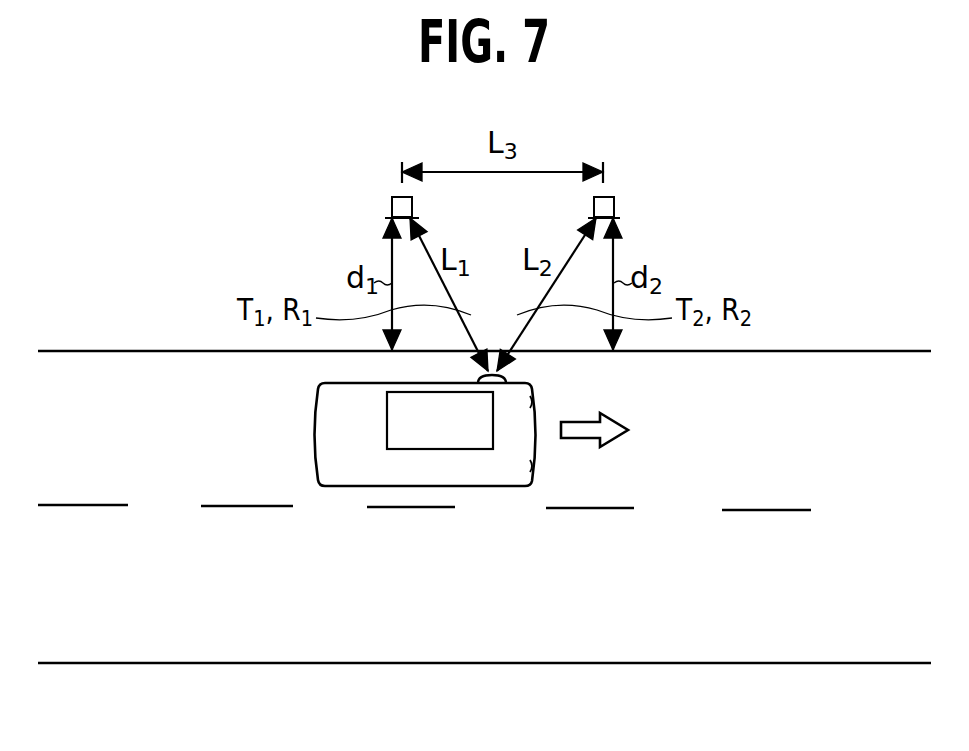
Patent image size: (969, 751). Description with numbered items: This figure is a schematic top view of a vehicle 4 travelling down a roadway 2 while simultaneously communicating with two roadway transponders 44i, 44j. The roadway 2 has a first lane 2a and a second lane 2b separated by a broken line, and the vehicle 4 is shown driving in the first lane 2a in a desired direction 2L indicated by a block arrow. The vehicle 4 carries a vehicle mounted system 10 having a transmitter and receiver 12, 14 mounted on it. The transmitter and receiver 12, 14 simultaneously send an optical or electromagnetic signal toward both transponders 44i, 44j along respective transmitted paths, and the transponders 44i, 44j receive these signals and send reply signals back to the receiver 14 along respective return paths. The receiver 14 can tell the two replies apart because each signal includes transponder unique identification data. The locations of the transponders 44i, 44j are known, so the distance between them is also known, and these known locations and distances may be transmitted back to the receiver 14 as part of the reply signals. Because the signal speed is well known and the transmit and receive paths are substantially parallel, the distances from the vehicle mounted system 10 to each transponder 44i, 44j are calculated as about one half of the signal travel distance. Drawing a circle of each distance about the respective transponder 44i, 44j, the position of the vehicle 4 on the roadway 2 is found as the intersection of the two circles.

The roadway 2 is at (493, 664).
The first lane 2a is at (98, 445).
The second lane 2b is at (82, 604).
The desired direction 2L is at (585, 440).
The vehicle 4 is at (356, 460).
The vehicle mounted system 10 is at (455, 436).
The transmitter 12 is at (551, 381).
The receiver 14 is at (505, 375).
The roadway transponder 44i is at (388, 209).
The roadway transponder 44j is at (616, 209).